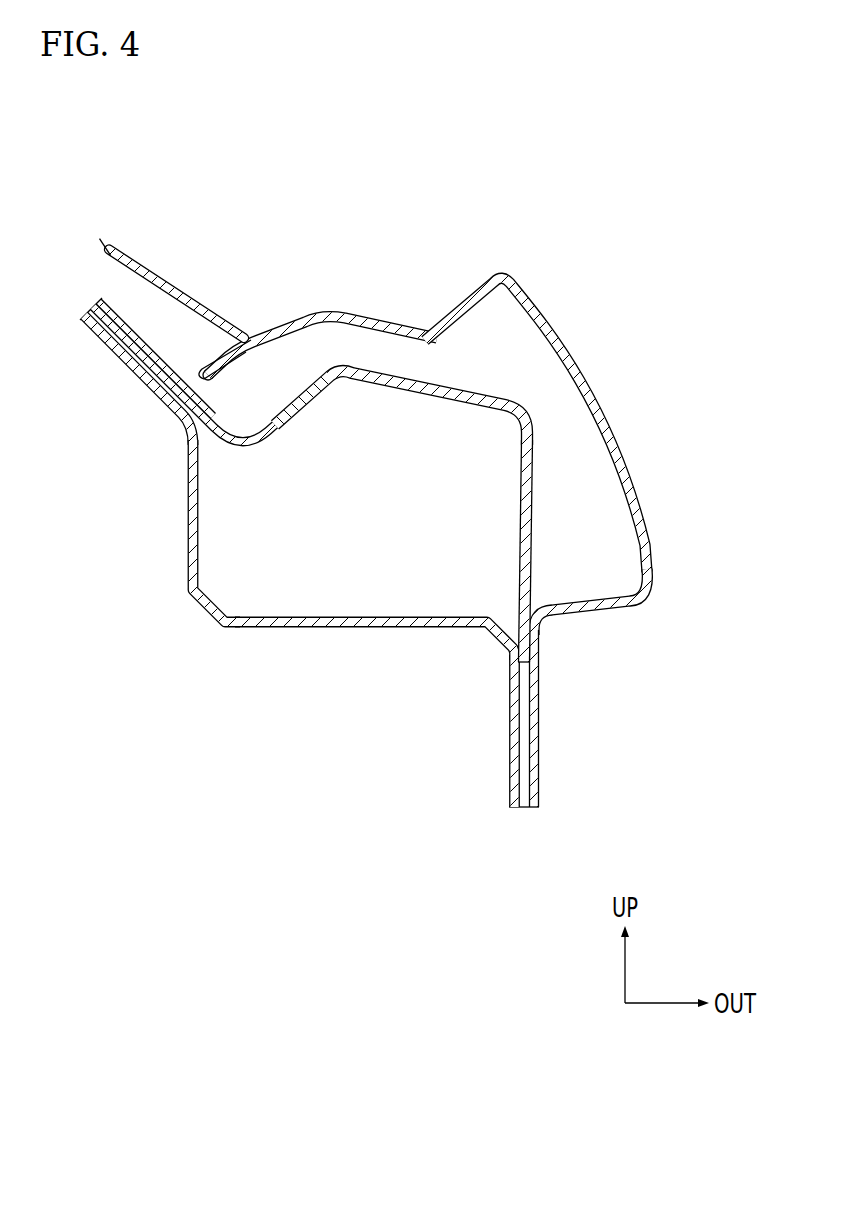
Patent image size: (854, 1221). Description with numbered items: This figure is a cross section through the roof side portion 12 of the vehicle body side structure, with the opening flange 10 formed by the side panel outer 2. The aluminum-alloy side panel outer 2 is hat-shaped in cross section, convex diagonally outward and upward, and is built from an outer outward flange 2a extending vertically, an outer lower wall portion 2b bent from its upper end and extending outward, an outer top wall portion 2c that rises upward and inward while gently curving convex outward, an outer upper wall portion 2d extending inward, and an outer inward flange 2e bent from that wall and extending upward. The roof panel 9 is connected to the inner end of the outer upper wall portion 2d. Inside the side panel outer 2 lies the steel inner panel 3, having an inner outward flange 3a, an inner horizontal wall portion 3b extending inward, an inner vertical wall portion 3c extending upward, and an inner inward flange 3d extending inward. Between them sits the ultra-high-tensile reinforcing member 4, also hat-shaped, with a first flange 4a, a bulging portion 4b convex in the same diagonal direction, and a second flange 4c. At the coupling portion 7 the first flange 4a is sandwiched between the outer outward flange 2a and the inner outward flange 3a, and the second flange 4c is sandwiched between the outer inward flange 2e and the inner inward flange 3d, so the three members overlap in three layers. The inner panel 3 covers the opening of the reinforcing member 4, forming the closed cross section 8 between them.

The side panel outer 2 is at (598, 355).
The outer outward flange 2a is at (538, 769).
The outer lower wall portion 2b is at (588, 611).
The outer top wall portion 2c is at (629, 457).
The outer upper wall portion 2d is at (349, 315).
The outer inward flange 2e is at (130, 320).
The inner panel 3 is at (335, 639).
The inner outward flange 3a is at (509, 765).
The inner horizontal wall portion 3b is at (407, 628).
The inner vertical wall portion 3c is at (190, 509).
The inner inward flange 3d is at (126, 367).
The reinforcing member 4 is at (550, 521).
The first flange 4a is at (530, 577).
The bulging portion 4b is at (437, 385).
The second flange 4c is at (212, 410).
The coupling portion 7 is at (150, 373).
The closed cross section 8 is at (380, 529).
The roof panel 9 is at (178, 286).
The opening flange 10 is at (597, 190).
The roof side portion 12 is at (588, 283).